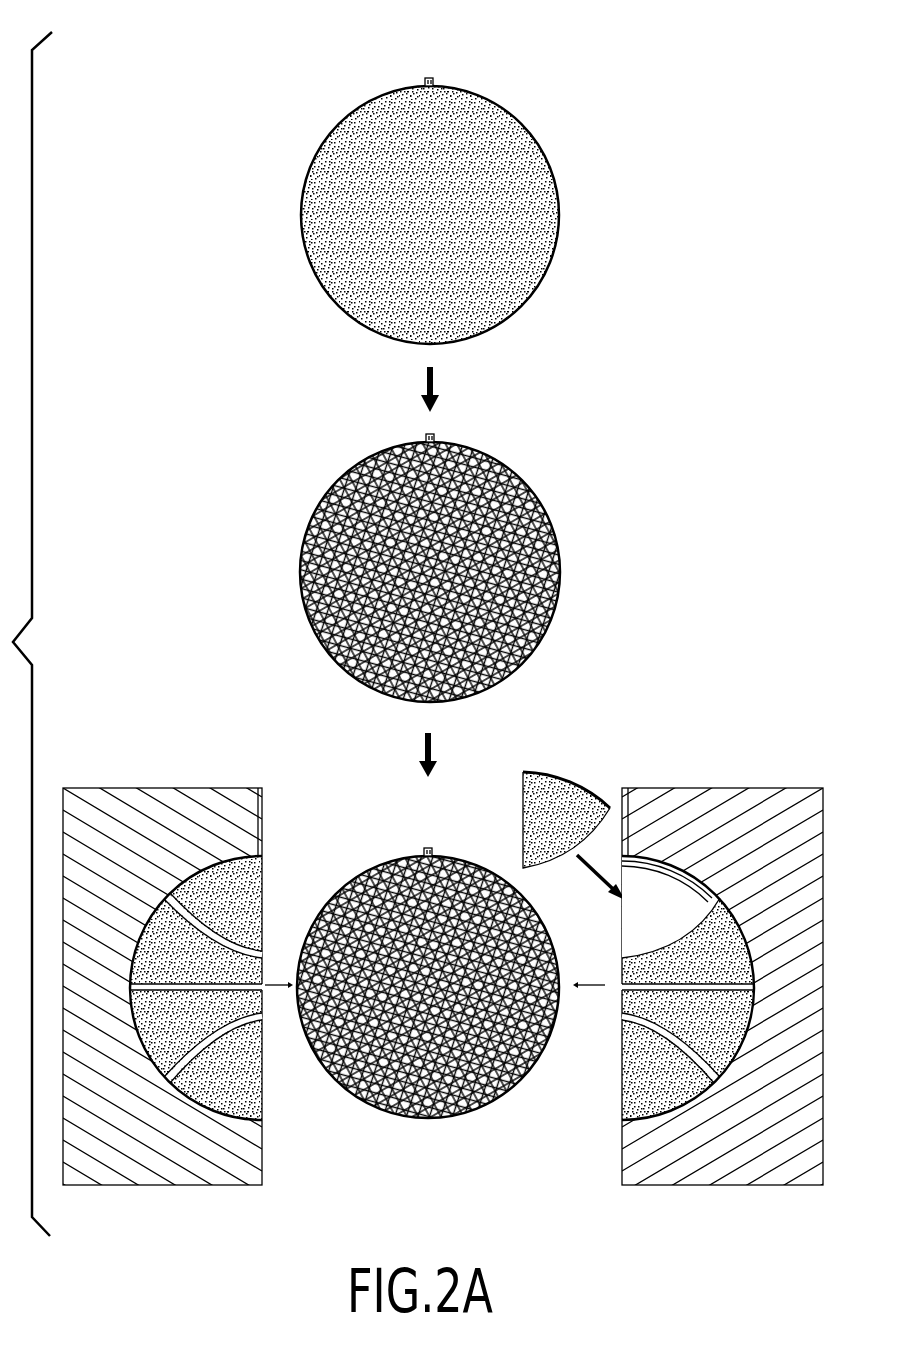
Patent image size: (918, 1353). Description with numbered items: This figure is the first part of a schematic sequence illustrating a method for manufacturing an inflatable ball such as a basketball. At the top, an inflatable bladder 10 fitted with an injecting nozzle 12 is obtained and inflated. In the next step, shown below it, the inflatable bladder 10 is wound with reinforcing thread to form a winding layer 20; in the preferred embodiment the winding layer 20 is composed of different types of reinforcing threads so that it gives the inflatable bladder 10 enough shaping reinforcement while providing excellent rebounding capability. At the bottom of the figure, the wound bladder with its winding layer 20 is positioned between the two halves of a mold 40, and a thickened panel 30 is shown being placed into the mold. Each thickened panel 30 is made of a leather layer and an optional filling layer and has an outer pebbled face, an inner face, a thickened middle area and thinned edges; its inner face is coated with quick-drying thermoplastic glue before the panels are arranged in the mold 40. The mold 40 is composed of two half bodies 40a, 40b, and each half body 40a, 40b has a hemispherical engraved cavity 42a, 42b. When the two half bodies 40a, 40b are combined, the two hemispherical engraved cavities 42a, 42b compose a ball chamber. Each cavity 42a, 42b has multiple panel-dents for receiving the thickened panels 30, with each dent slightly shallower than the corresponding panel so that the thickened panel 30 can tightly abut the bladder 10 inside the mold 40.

The inflatable bladder 10 is at (537, 196).
The injecting nozzle 12 is at (433, 79).
The winding layer 20 is at (537, 507).
The thickened panel 30 is at (563, 793).
The mold 40 is at (443, 990).
The half body 40a is at (208, 990).
The half body 40b is at (721, 990).
The hemispherical engraved cavity 42a is at (257, 1105).
The hemispherical engraved cavity 42b is at (665, 868).